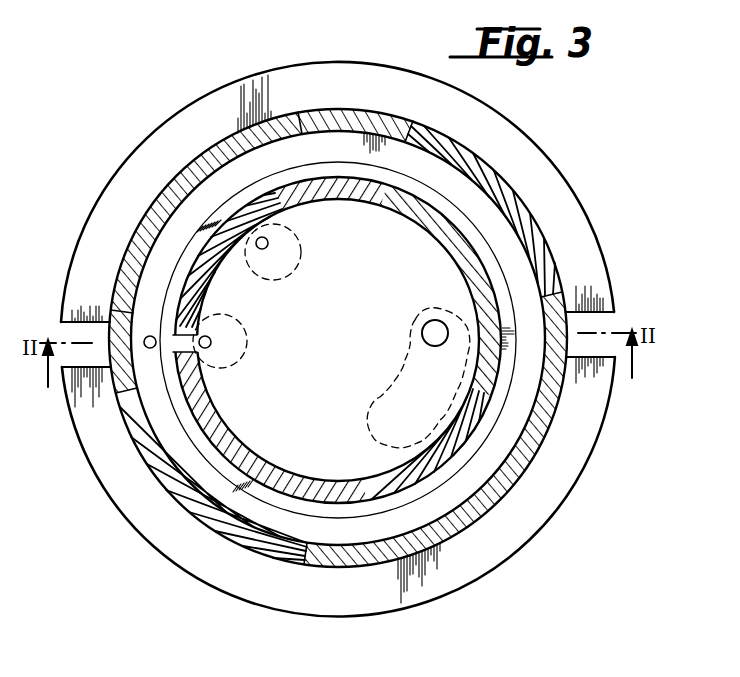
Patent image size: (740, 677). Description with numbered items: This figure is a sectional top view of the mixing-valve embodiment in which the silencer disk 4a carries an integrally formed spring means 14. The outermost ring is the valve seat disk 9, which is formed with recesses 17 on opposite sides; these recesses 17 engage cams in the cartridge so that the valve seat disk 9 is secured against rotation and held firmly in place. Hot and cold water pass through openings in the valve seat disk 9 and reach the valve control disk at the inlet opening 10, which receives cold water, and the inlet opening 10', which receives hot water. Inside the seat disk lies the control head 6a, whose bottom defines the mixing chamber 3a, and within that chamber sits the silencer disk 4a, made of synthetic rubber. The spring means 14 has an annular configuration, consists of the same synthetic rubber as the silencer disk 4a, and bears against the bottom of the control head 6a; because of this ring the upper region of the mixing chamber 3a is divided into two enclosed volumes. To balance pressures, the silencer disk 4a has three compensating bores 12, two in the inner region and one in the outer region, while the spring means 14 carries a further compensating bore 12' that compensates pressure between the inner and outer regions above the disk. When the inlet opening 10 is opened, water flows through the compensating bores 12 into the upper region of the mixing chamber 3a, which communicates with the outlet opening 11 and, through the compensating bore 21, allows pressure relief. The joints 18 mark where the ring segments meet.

The valve seat disk 9 is at (343, 61).
The recesses 17 is at (70, 333).
The control head 6a is at (373, 110).
The silencer disk 4a is at (407, 137).
The segment joint 18 is at (302, 127).
The spring means 14 is at (463, 237).
The mixing chamber 3a is at (344, 319).
The compensating bore 12' is at (170, 321).
The compensating bores 12 is at (207, 317).
The inlet opening 10 is at (240, 341).
The inlet opening 10' is at (292, 252).
The compensating bore 21 is at (432, 328).
The outlet opening 11 is at (403, 398).